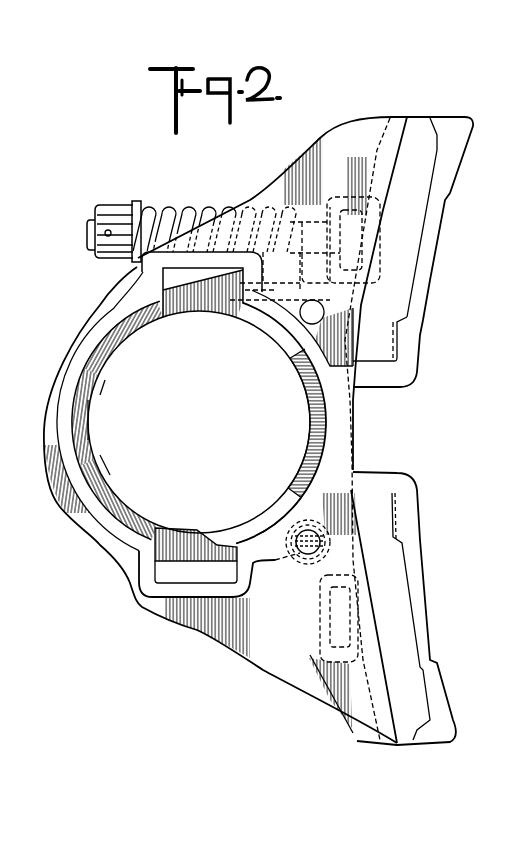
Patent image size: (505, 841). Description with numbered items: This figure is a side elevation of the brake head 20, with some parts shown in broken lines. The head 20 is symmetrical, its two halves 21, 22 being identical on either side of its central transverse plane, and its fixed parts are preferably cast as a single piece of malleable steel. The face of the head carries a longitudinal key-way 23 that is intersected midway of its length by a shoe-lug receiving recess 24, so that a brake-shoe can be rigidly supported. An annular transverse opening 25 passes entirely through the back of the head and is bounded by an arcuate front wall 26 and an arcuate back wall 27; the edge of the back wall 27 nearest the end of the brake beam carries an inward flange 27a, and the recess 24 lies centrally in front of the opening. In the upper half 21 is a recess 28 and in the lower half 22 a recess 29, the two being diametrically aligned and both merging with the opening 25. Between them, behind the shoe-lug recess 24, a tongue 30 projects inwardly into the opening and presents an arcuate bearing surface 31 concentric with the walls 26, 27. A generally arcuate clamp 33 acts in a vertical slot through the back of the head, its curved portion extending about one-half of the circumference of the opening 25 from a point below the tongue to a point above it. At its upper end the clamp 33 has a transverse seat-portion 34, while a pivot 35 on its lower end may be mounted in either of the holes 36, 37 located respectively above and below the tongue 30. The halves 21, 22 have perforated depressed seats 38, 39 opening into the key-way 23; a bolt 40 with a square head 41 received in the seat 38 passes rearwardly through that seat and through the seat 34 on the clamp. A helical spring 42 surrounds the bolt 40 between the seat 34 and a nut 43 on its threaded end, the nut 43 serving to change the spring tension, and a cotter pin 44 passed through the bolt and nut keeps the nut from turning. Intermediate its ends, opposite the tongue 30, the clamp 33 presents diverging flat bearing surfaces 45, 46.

The head 20 is at (393, 99).
The head-half 21 is at (372, 128).
The head-half 22 is at (272, 655).
The longitudinal key-way 23 is at (407, 240).
The shoe-lug receiving recess 24 is at (370, 440).
The annular transverse opening 25 is at (212, 418).
The arcuate front wall 26 is at (297, 503).
The arcuate back wall 27 is at (63, 437).
The inward flange 27a is at (90, 422).
The recess 28 is at (172, 275).
The recess 29 is at (177, 573).
The tongue 30 is at (313, 388).
The arcuate bearing surface 31 is at (307, 437).
The clamp 33 is at (163, 328).
The transverse seat-portion 34 is at (303, 210).
The pivot 35 is at (303, 533).
The hole 36 is at (317, 312).
The hole 37 is at (290, 560).
The perforated depressed seat 38 is at (352, 207).
The seat 39 is at (310, 657).
The bolt 40 is at (92, 243).
The square head 41 is at (362, 257).
The helical spring 42 is at (213, 208).
The nut 43 is at (113, 208).
The cotter pin 44 is at (105, 233).
The flat bearing surface 45 is at (115, 380).
The flat bearing surface 46 is at (113, 477).